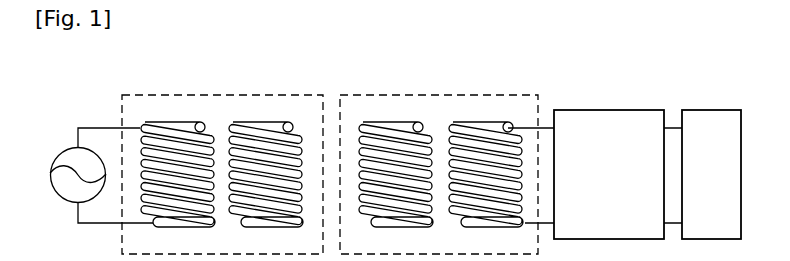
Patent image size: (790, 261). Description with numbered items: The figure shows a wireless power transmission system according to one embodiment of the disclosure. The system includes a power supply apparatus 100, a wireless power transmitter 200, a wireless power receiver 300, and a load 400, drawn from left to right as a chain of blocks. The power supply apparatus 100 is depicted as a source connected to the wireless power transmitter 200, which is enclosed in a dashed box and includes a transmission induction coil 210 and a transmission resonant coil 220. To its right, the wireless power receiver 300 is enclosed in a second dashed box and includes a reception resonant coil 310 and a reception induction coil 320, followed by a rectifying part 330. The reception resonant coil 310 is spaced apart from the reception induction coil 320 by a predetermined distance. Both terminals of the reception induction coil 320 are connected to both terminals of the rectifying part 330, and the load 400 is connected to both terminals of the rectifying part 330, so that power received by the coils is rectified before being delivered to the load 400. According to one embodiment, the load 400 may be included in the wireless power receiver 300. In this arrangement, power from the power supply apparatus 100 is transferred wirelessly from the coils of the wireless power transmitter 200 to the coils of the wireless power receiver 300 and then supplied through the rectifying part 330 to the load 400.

The power supply apparatus 100 is at (56, 152).
The wireless power transmitter 200 is at (144, 94).
The transmission induction coil 210 is at (185, 132).
The transmission resonant coil 220 is at (267, 132).
The wireless power receiver 300 is at (431, 94).
The reception resonant coil 310 is at (378, 132).
The reception induction coil 320 is at (476, 132).
The rectifying part 330 is at (607, 109).
The load 400 is at (710, 109).